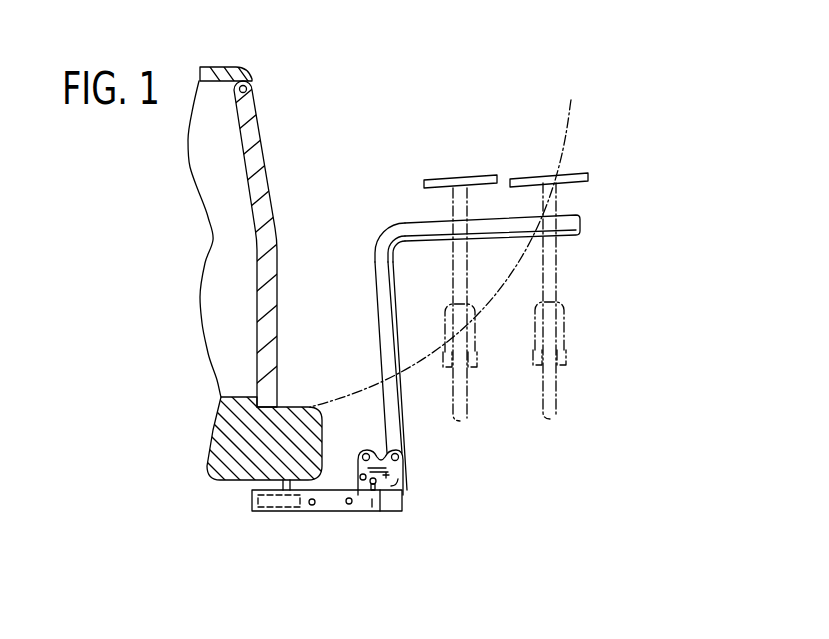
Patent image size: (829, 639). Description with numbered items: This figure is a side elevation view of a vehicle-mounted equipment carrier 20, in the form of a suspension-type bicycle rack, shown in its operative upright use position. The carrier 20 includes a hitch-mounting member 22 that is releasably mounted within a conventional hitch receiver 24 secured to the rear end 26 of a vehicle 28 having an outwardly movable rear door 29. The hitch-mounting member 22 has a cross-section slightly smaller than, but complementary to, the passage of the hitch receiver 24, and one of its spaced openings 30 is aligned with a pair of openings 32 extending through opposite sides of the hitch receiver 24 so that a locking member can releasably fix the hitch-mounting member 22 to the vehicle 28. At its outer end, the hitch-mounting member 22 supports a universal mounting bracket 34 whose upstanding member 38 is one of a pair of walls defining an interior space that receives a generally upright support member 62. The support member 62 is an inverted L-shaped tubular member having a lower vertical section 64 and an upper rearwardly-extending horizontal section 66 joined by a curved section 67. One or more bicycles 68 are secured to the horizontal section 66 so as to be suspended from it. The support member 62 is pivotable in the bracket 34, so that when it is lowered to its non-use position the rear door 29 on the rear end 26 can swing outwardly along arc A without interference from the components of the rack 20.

The equipment carrier 20 is at (462, 286).
The hitch-mounting member 22 is at (406, 479).
The hitch receiver 24 is at (270, 516).
The rear end 26 is at (258, 72).
The vehicle 28 is at (267, 300).
The rear door 29 is at (268, 165).
The openings 30 is at (349, 505).
The openings 32 is at (311, 506).
The universal mounting bracket 34 is at (351, 453).
The upstanding member 38 is at (399, 461).
The support member 62 is at (466, 328).
The vertical section 64 is at (378, 345).
The horizontal section 66 is at (568, 214).
The curved section 67 is at (398, 227).
The bicycles 68 is at (436, 296).
The arc A is at (573, 130).